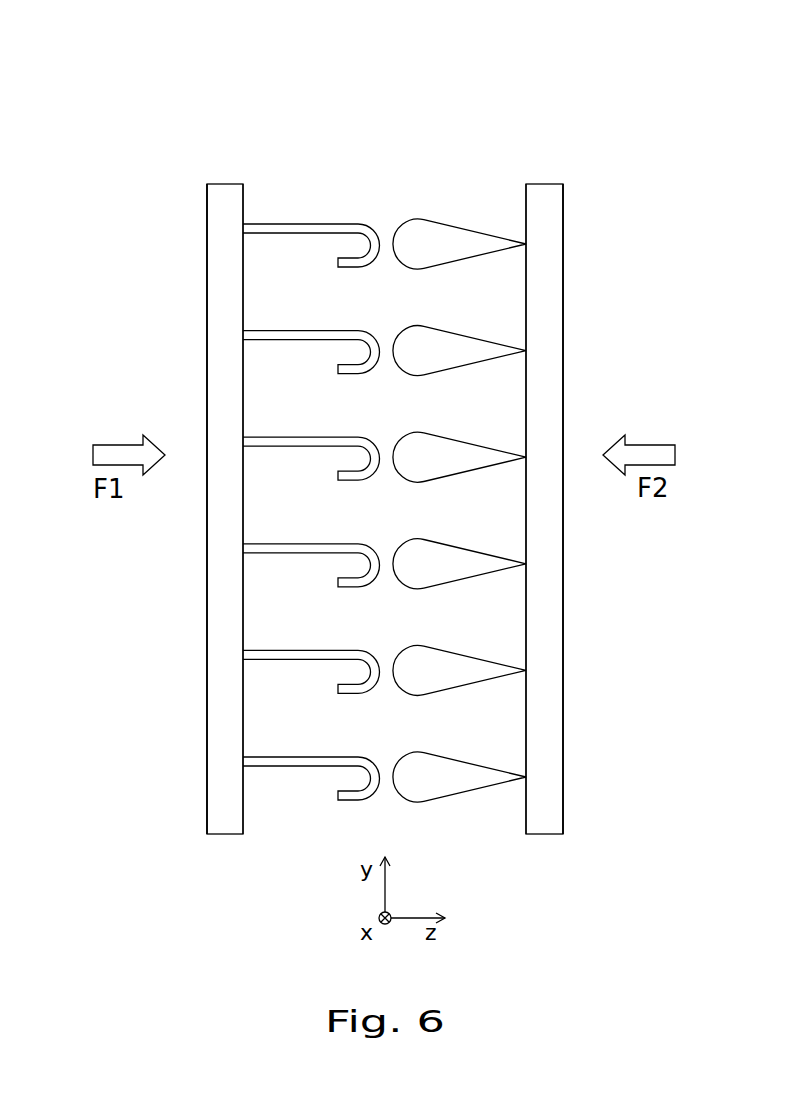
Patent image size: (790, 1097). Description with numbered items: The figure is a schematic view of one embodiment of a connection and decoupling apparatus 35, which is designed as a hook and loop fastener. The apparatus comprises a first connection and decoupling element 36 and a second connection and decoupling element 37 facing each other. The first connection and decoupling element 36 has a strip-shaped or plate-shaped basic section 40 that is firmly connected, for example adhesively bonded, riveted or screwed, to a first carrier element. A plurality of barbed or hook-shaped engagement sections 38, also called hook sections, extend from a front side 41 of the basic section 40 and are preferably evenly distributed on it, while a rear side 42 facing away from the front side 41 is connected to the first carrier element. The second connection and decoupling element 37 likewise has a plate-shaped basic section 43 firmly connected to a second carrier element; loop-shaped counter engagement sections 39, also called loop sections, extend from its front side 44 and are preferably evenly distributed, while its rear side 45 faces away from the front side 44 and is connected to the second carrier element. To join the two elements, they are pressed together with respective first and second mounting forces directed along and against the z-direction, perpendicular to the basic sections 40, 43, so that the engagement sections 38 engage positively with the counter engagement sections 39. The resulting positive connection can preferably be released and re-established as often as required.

The connection and decoupling apparatus 35 is at (385, 103).
The first connection and decoupling element 36 is at (226, 178).
The second connection and decoupling element 37 is at (545, 178).
The engagement sections 38 is at (337, 222).
The counter engagement sections 39 is at (458, 220).
The basic section 40 is at (207, 752).
The front side 41 is at (243, 305).
The rear side 42 is at (207, 623).
The basic section 43 is at (563, 752).
The front side 44 is at (526, 305).
The rear side 45 is at (563, 625).